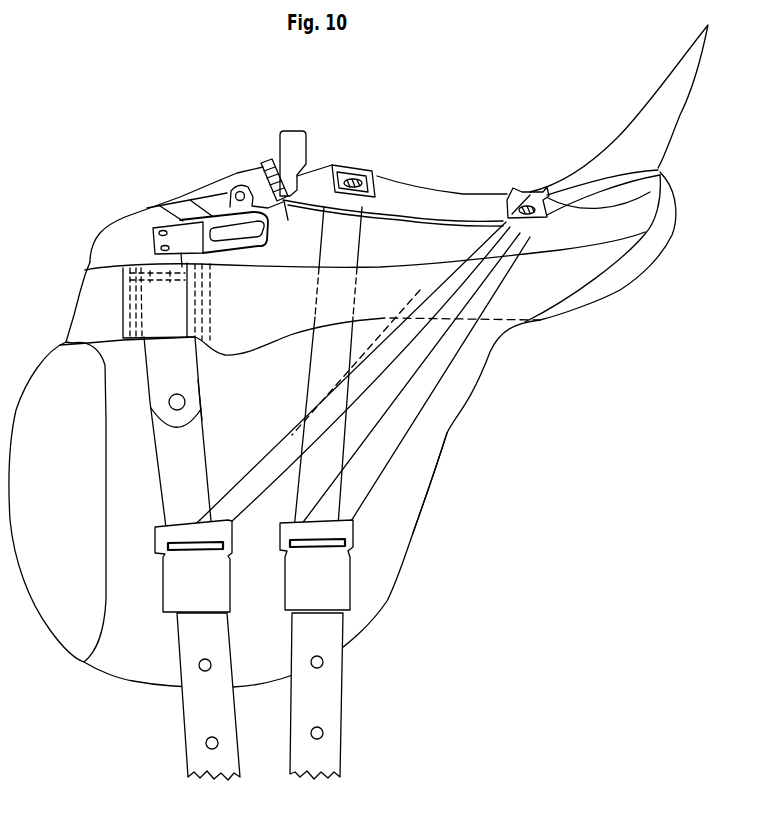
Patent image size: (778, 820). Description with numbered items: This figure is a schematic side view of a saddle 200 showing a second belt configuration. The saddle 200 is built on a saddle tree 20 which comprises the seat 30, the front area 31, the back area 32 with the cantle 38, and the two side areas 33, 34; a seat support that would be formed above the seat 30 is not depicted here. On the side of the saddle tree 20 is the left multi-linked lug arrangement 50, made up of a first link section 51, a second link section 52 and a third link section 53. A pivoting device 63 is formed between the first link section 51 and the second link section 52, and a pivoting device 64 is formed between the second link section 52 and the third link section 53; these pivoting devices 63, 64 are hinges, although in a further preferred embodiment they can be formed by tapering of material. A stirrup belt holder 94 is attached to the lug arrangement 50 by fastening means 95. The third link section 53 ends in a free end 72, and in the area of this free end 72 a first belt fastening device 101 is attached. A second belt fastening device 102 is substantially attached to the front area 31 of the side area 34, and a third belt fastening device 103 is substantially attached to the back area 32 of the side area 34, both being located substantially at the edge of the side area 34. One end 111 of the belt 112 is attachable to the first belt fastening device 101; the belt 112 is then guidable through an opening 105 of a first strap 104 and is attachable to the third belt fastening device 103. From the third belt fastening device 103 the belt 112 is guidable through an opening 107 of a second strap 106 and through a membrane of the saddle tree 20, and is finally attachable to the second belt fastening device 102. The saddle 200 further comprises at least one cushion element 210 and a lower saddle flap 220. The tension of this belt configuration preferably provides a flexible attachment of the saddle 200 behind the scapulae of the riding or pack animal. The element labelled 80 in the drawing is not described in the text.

The saddle tree 20 is at (218, 118).
The saddle 200 is at (462, 84).
The seat 30 is at (460, 209).
The front area 31 is at (320, 172).
The back area 32 is at (508, 186).
The side area 33 is at (429, 190).
The side area 34 is at (401, 220).
The cantle 38 is at (669, 73).
The left multi-linked lug arrangement 50 is at (177, 301).
The first link section 51 is at (286, 203).
The second link section 52 is at (194, 200).
The third link section 53 is at (161, 371).
The pivoting device 63 is at (265, 162).
The pivoting device 64 is at (135, 277).
The free end 72 is at (160, 411).
The bracket 80 is at (292, 131).
The stirrup belt holder 94 is at (241, 238).
The fastening means 95 is at (240, 186).
The first belt fastening device 101 is at (184, 404).
The second belt fastening device 102 is at (355, 181).
The third belt fastening device 103 is at (520, 202).
The first strap 104 is at (196, 565).
The opening 105 is at (166, 550).
The second strap 106 is at (322, 565).
The opening 107 is at (350, 539).
The end of the belt 111 is at (200, 412).
The belt 112 is at (316, 364).
The cushion element 210 is at (644, 258).
The lower saddle flap 220 is at (417, 493).